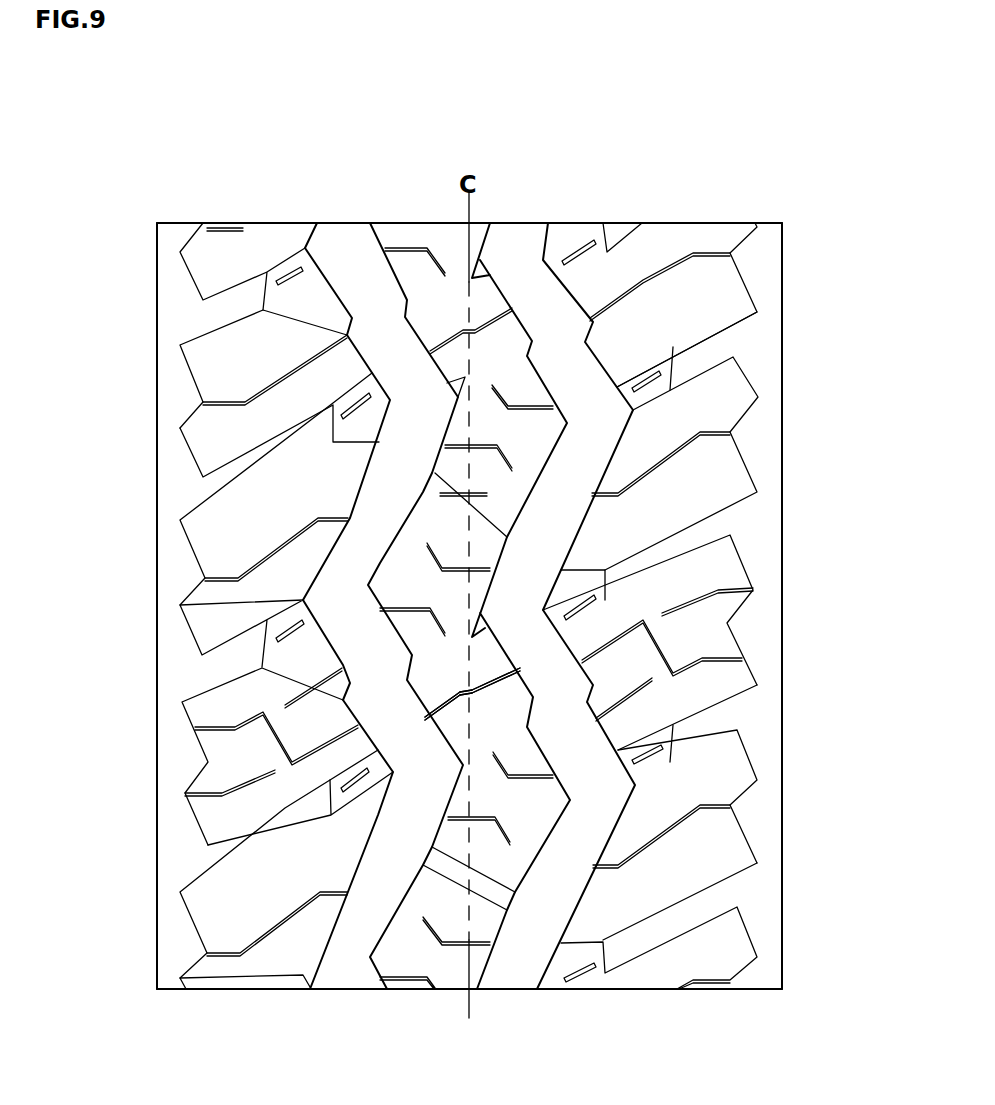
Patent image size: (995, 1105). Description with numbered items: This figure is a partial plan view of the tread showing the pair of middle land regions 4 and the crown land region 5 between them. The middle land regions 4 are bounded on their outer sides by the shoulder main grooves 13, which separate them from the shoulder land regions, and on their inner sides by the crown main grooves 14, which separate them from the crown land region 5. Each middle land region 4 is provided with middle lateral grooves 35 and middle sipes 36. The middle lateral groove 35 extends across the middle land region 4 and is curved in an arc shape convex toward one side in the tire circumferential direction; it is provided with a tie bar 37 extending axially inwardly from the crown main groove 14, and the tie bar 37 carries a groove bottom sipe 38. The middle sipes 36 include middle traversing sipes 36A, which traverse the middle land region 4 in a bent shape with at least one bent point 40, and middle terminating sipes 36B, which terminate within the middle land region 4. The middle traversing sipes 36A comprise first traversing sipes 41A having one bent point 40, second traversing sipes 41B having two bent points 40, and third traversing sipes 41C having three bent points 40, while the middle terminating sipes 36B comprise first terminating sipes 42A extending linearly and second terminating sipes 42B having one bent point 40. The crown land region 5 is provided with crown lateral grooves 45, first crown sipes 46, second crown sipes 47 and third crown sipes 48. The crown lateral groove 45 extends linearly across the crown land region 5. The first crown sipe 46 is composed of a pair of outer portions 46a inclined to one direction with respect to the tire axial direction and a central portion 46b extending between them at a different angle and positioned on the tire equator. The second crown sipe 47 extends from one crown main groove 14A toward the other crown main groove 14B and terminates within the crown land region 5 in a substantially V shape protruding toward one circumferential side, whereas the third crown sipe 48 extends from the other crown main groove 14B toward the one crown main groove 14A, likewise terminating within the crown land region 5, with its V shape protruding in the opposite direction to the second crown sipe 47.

The middle land region 4 is at (245, 250).
The crown land region 5 is at (425, 250).
The shoulder main groove 13 is at (170, 268).
The crown main groove 14 is at (352, 270).
The one crown main groove 14A is at (520, 955).
The other crown main groove 14B is at (346, 955).
The middle lateral groove 35 is at (732, 347).
The middle sipe 36 is at (688, 458).
The middle traversing sipe 36A is at (705, 908).
The middle terminating sipe 36B is at (675, 725).
The tie bar 37 is at (658, 848).
The groove bottom sipe 38 is at (650, 780).
The bent point 40 is at (700, 250).
The first traversing sipe 41A is at (762, 292).
The second traversing sipe 41B is at (748, 402).
The third traversing sipe 41C is at (745, 660).
The first terminating sipe 42A is at (645, 699).
The second terminating sipe 42B is at (762, 594).
The crown lateral groove 45 is at (482, 460).
The first crown sipe 46 is at (66, 668).
The outer portion 46a is at (458, 697).
The central portion 46b is at (462, 694).
The second crown sipe 47 is at (430, 558).
The third crown sipe 48 is at (440, 632).